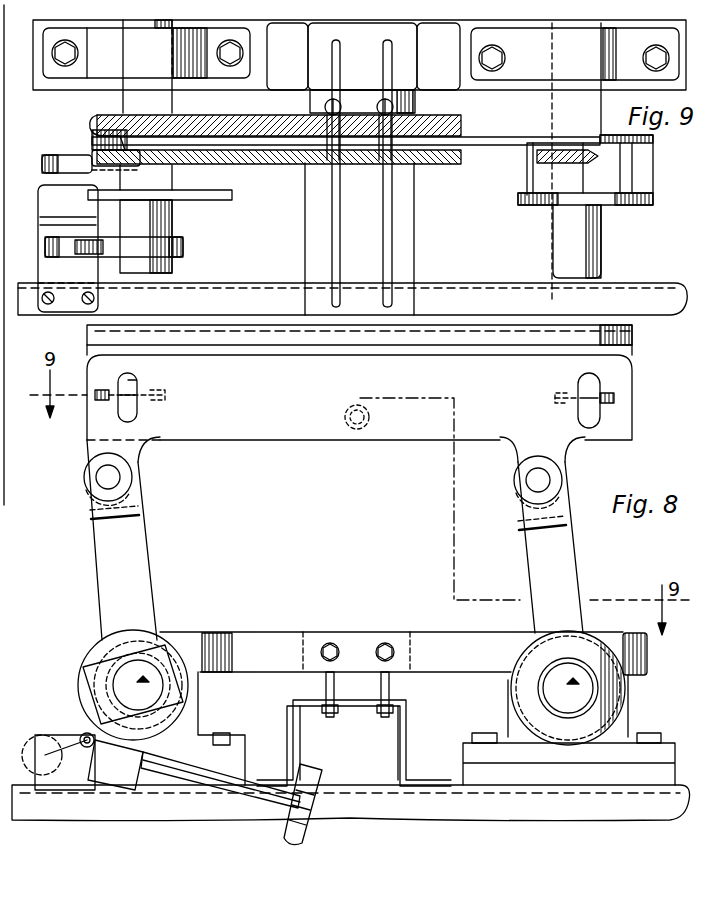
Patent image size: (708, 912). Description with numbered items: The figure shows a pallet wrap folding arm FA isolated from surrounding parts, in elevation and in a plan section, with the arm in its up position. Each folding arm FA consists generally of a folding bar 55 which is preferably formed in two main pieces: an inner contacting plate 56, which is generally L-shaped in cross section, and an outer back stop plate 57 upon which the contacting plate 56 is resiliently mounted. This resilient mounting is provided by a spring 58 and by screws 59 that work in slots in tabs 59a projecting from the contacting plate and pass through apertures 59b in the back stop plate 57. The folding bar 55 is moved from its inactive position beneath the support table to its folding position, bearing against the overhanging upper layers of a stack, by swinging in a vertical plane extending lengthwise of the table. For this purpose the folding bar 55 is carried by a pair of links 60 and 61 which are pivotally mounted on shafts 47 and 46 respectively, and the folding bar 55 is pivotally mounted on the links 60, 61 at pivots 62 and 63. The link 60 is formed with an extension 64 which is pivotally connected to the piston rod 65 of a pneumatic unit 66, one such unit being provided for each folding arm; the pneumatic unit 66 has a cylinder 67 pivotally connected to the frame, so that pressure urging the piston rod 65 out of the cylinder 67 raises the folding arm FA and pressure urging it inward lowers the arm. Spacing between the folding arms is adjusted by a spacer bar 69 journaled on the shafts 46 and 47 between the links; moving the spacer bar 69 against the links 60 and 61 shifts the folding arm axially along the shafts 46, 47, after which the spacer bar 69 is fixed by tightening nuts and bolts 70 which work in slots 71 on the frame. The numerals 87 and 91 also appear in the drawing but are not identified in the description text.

In FIG. 9, the shaft 46 is at (600, 235).
In FIG. 8, the shaft 46 is at (578, 672).
In FIG. 9, the shaft 47 is at (172, 215).
In FIG. 8, the shaft 47 is at (128, 675).
In FIG. 9, the folding bar 55 is at (256, 165).
In FIG. 8, the folding bar 55 is at (247, 440).
In FIG. 9, the inner contacting plate 56 is at (460, 117).
In FIG. 8, the inner contacting plate 56 is at (632, 356).
In FIG. 9, the outer back stop plate 57 is at (432, 165).
In FIG. 8, the outer back stop plate 57 is at (440, 445).
In FIG. 9, the spring 58 is at (345, 163).
In FIG. 9, the screws 59 is at (92, 147).
In FIG. 8, the screws 59 is at (158, 400).
In FIG. 9, the tabs 59a is at (98, 114).
In FIG. 8, the tabs 59a is at (137, 383).
In FIG. 8, the apertures 59b is at (128, 373).
In FIG. 8, the link 60 is at (150, 567).
In FIG. 8, the link 61 is at (572, 565).
In FIG. 8, the pivot 62 is at (96, 475).
In FIG. 8, the pivot 63 is at (550, 482).
In FIG. 8, the extension 64 is at (60, 735).
In FIG. 8, the piston rod 65 is at (178, 797).
In FIG. 8, the pneumatic unit 66 is at (322, 765).
In FIG. 8, the cylinder 67 is at (284, 835).
In FIG. 8, the spacer bar 69 is at (415, 632).
In FIG. 8, the nuts and bolts 70 is at (328, 690).
In FIG. 9, the slots 71 is at (331, 245).
In FIG. 8, the member 87 is at (2, 540).
In FIG. 8, the member 91 is at (2, 588).
In FIG. 8, the folding arm FA is at (632, 420).